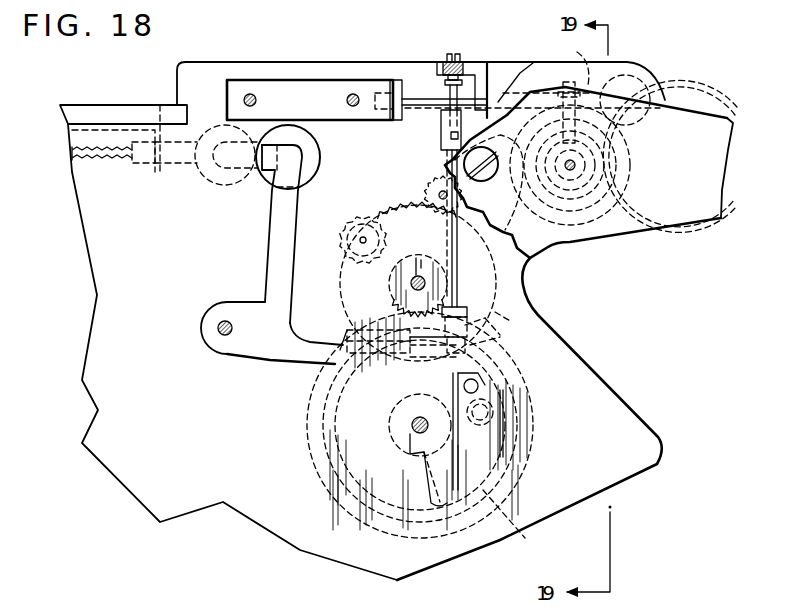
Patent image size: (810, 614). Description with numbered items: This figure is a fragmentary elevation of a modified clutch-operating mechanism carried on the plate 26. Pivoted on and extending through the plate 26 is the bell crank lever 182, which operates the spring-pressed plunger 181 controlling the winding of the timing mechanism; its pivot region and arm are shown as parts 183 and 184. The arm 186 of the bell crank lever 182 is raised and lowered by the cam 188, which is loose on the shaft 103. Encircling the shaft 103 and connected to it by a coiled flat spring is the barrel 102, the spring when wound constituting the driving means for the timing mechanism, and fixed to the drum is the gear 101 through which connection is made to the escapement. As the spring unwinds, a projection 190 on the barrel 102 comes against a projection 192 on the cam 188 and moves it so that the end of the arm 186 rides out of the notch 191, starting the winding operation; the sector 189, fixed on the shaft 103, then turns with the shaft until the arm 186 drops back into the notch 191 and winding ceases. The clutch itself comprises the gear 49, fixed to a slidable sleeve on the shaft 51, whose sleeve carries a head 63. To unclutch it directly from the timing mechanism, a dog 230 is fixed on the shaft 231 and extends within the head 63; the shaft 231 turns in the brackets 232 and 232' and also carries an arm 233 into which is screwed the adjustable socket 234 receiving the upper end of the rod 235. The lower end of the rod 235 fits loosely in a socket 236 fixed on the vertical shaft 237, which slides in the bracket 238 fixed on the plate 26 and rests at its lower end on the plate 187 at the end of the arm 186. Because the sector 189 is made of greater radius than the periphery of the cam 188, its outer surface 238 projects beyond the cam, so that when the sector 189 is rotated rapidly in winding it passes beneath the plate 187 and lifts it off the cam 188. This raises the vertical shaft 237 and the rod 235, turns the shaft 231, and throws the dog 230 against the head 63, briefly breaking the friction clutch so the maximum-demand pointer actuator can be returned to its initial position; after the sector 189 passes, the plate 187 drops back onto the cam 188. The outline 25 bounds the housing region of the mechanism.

The plate 26 is at (97, 297).
The cover 25 is at (543, 248).
The gear 49 is at (587, 203).
The shaft 51 is at (574, 172).
The head 63 is at (600, 170).
The gear 101 is at (349, 514).
The barrel 102 is at (533, 433).
The shaft 103 is at (413, 424).
The spring-pressed plunger 181 is at (172, 165).
The bell crank lever 182 is at (214, 305).
The arm 183 is at (222, 331).
The link 184 is at (281, 212).
The arm 186 is at (307, 353).
The plate 187 is at (498, 329).
The cam 188 is at (318, 417).
The sector 189 is at (413, 469).
The projection 190 is at (473, 386).
The notch 191 is at (402, 373).
The projection 192 is at (527, 400).
The dog 230 is at (568, 91).
The shaft 231 is at (417, 98).
The bracket 232 is at (314, 76).
The bracket 232' is at (668, 139).
The arm 233 is at (483, 77).
The adjustable socket 234 is at (452, 64).
The rod 235 is at (448, 95).
The socket 236 is at (446, 150).
The vertical shaft 237 is at (452, 227).
The bracket 238 is at (460, 310).